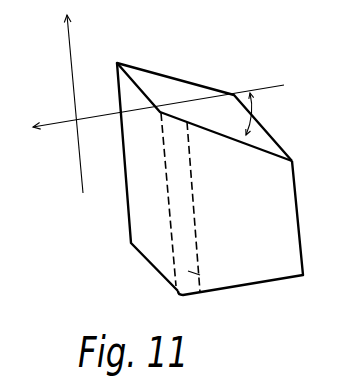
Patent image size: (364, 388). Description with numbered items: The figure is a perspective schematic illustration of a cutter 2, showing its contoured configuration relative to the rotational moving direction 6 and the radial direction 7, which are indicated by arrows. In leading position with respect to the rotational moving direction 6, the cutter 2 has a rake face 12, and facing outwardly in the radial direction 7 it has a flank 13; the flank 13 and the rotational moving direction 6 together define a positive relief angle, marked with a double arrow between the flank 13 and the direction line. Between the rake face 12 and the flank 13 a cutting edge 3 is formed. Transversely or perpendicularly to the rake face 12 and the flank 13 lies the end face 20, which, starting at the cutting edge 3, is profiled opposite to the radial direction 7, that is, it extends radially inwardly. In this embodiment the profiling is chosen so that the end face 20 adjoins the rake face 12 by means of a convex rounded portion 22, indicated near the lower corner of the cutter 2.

The cutter 2 is at (221, 165).
The cutting edge 3 is at (140, 86).
The rotational moving direction 6 is at (86, 118).
The radial direction 7 is at (71, 83).
The rake face 12 is at (157, 185).
The flank 13 is at (204, 93).
The end face 20 is at (240, 224).
The convex rounded portion 22 is at (199, 274).